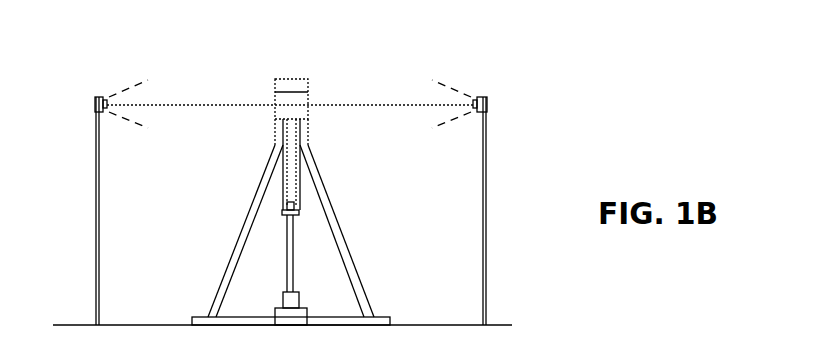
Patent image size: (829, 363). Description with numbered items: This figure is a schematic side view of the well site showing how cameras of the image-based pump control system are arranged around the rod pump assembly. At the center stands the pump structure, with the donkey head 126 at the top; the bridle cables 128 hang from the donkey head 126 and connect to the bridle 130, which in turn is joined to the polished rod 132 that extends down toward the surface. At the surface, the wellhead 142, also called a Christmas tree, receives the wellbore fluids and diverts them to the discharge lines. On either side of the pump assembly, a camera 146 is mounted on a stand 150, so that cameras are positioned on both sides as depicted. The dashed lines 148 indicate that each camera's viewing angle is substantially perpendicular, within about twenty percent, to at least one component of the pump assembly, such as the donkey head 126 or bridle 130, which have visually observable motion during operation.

The donkey head 126 is at (290, 79).
The bridle cables 128 is at (283, 178).
The bridle 130 is at (283, 210).
The polished rod 132 is at (287, 272).
The wellhead 142 is at (312, 298).
The cameras 146 is at (96, 97).
The dashed lines 148 is at (222, 103).
The stand 150 is at (96, 203).